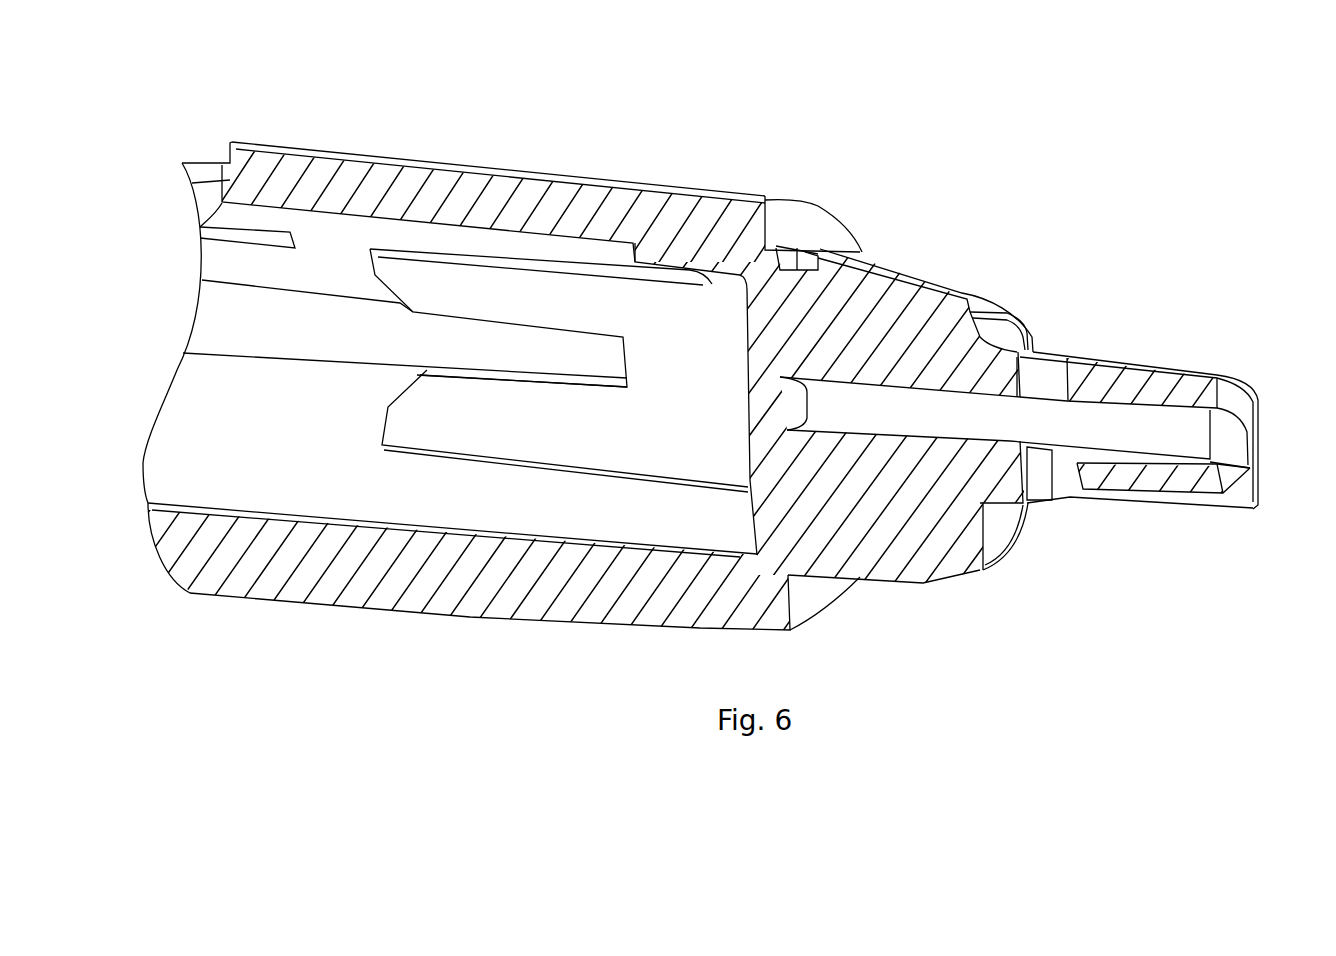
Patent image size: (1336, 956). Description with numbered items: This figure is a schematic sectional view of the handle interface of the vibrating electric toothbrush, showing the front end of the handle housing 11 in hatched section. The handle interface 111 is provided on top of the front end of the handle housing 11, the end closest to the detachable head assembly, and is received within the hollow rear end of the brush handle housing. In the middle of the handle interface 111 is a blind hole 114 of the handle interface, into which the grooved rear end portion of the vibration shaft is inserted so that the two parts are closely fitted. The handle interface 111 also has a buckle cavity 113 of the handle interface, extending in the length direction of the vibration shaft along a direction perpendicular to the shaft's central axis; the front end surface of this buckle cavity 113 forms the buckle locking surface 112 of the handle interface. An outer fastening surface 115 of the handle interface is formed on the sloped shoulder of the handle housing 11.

The handle housing 11 is at (533, 188).
The handle interface 111 is at (884, 605).
The buckle locking surface of handle interface 112 is at (1070, 477).
The buckle cavity of handle interface 113 is at (1060, 487).
The blind hole of handle interface 114 is at (1028, 425).
The fastening surface of handle interface 115 is at (887, 272).